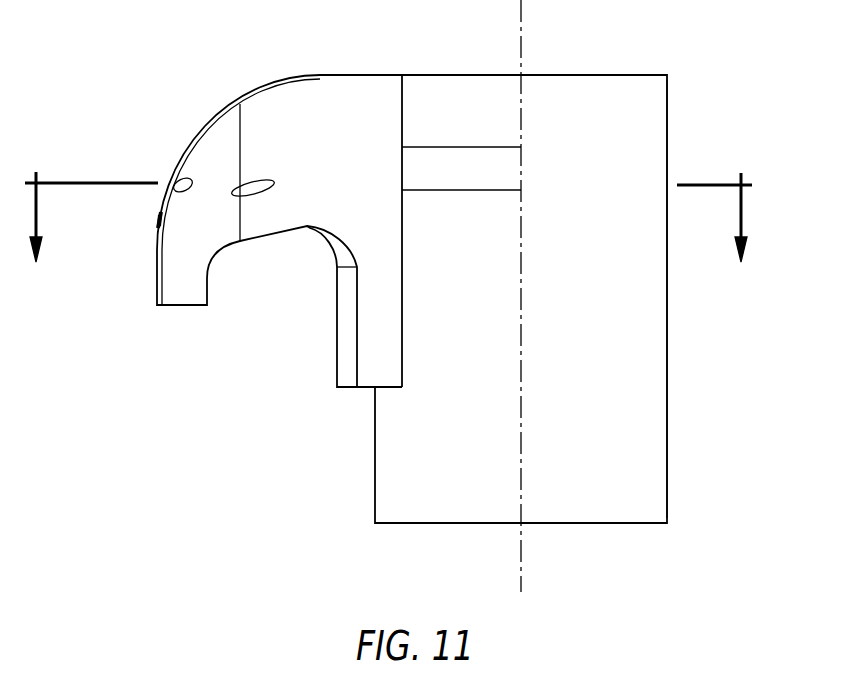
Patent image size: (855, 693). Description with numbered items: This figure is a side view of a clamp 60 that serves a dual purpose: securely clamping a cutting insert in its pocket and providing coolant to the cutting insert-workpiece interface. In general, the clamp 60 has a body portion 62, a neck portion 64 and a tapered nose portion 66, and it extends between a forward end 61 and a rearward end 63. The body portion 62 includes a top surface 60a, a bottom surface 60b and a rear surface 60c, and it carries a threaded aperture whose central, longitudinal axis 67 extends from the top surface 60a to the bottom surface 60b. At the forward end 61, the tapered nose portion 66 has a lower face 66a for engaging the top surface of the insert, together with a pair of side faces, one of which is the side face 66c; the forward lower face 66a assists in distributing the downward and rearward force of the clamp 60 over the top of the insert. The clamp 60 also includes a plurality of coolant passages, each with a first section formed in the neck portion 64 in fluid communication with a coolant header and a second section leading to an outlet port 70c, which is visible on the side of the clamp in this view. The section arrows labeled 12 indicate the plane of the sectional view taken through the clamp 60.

The nozzle / retainer body 60 is at (178, 74).
The upper portion of body 60a is at (460, 74).
The lower portion of body 60b is at (409, 523).
The rear face of body 60c is at (667, 440).
The edge of curved wall 61 is at (146, 218).
The upper recess 62 is at (689, 114).
The lower recess 63 is at (687, 349).
The curved wall 64 is at (344, 69).
The hook arm 66 is at (196, 260).
The hook end 66a is at (175, 307).
The hook inner wall 66c is at (172, 255).
The center axis 67 is at (521, 43).
The opening 70c is at (177, 176).
The section line 12- 12 is at (390, 200).